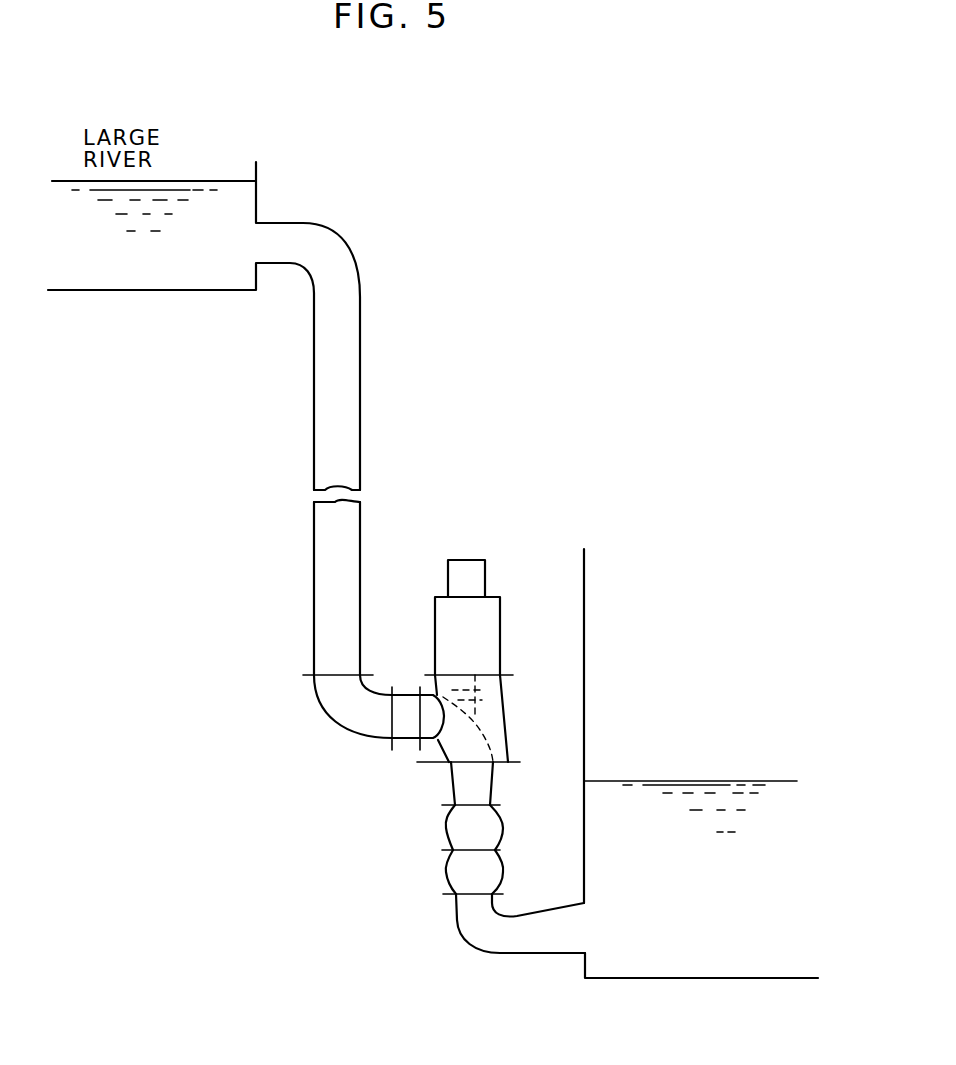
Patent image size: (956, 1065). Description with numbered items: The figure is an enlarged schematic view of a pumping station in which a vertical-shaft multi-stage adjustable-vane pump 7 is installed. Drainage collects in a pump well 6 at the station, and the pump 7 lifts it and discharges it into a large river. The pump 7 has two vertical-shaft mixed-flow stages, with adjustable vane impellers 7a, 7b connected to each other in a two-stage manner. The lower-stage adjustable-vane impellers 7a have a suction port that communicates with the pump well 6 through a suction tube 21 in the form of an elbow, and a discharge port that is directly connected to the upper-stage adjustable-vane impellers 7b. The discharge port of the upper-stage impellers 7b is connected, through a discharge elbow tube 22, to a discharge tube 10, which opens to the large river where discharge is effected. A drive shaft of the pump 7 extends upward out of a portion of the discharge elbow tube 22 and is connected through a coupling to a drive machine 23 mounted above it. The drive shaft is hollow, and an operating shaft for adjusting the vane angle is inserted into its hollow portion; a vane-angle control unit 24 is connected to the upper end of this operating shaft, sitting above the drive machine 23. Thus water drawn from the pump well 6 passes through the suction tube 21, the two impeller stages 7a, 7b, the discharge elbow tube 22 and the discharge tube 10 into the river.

The discharge tube 10 is at (313, 565).
The vane-angle control unit 24 is at (466, 558).
The drive machine 23 is at (502, 628).
The discharge elbow tube 22 is at (447, 787).
The pump 7 is at (440, 849).
The upper-stage adjustable-vane impellers 7b is at (505, 830).
The lower-stage adjustable-vane impellers 7a is at (426, 855).
The suction tube 21 is at (487, 940).
The pump well 6 is at (603, 970).